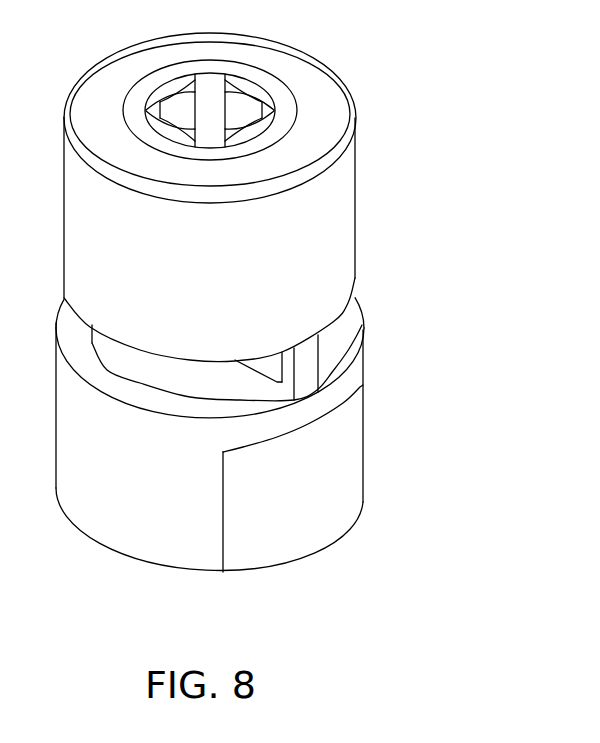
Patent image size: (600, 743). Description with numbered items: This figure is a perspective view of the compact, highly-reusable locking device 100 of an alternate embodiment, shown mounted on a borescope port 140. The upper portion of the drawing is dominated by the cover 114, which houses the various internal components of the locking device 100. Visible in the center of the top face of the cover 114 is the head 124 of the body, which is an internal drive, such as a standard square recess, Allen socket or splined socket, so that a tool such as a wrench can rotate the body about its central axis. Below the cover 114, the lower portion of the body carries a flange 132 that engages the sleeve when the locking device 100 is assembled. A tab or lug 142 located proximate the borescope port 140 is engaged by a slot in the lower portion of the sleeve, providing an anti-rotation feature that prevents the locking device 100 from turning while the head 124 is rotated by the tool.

The locking device 100 is at (287, 298).
The cover 114 is at (376, 216).
The head 124 is at (247, 102).
The flange 132 is at (324, 338).
The tab or lug 142 is at (298, 363).
The borescope port 140 is at (388, 439).